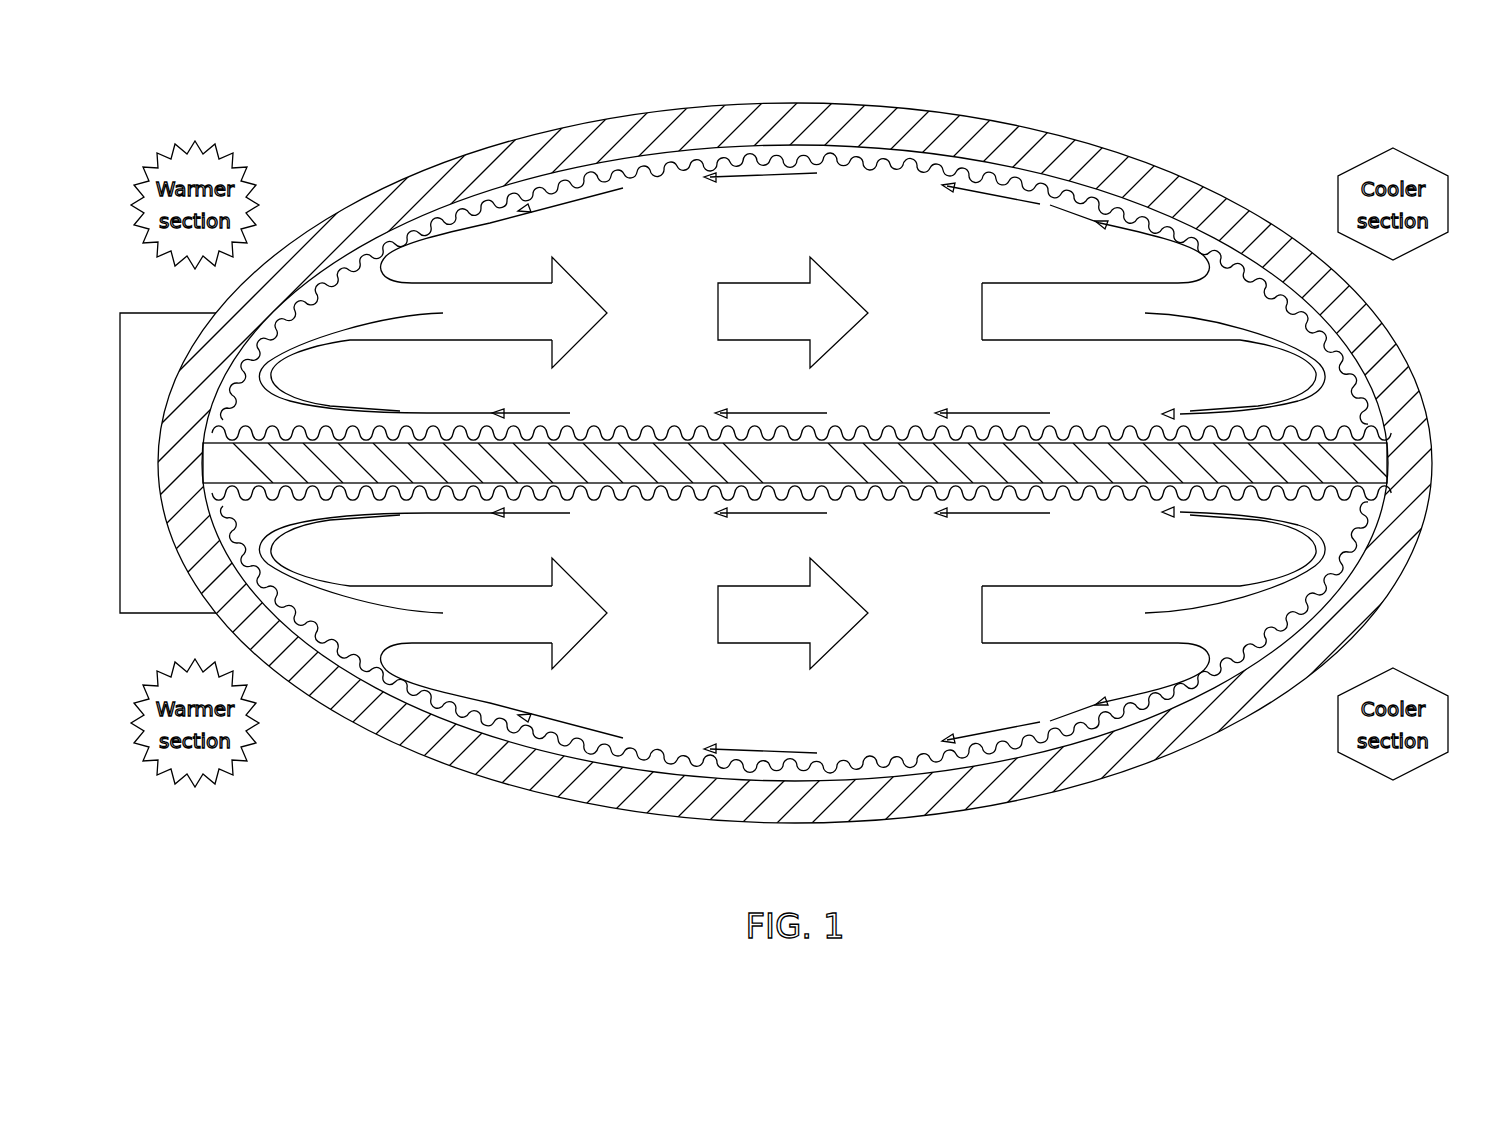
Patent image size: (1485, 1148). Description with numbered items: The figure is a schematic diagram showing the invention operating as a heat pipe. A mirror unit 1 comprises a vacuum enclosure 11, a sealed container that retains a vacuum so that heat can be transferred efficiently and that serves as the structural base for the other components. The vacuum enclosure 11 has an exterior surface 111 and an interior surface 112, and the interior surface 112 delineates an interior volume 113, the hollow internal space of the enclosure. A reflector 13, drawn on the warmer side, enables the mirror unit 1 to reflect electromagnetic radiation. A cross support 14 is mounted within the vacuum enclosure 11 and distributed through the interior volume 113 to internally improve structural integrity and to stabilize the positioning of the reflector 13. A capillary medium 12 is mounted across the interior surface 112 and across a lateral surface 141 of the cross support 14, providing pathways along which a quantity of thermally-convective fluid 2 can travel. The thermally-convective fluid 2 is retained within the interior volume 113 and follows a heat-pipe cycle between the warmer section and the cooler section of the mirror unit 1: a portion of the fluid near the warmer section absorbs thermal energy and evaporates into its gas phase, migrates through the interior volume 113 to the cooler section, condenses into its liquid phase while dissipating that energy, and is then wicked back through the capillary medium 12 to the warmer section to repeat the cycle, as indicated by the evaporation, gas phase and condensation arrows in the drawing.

The mirror unit 1 is at (1170, 110).
The vacuum enclosure 11 is at (742, 480).
The exterior surface 111 is at (360, 198).
The interior surface 112 is at (657, 158).
The interior volume 113 is at (1082, 390).
The capillary medium 12 is at (888, 166).
The reflector 13 is at (172, 594).
The cross supports 14 is at (782, 475).
The lateral surface 141 is at (672, 428).
The thermally-convective fluid 2 is at (563, 206).